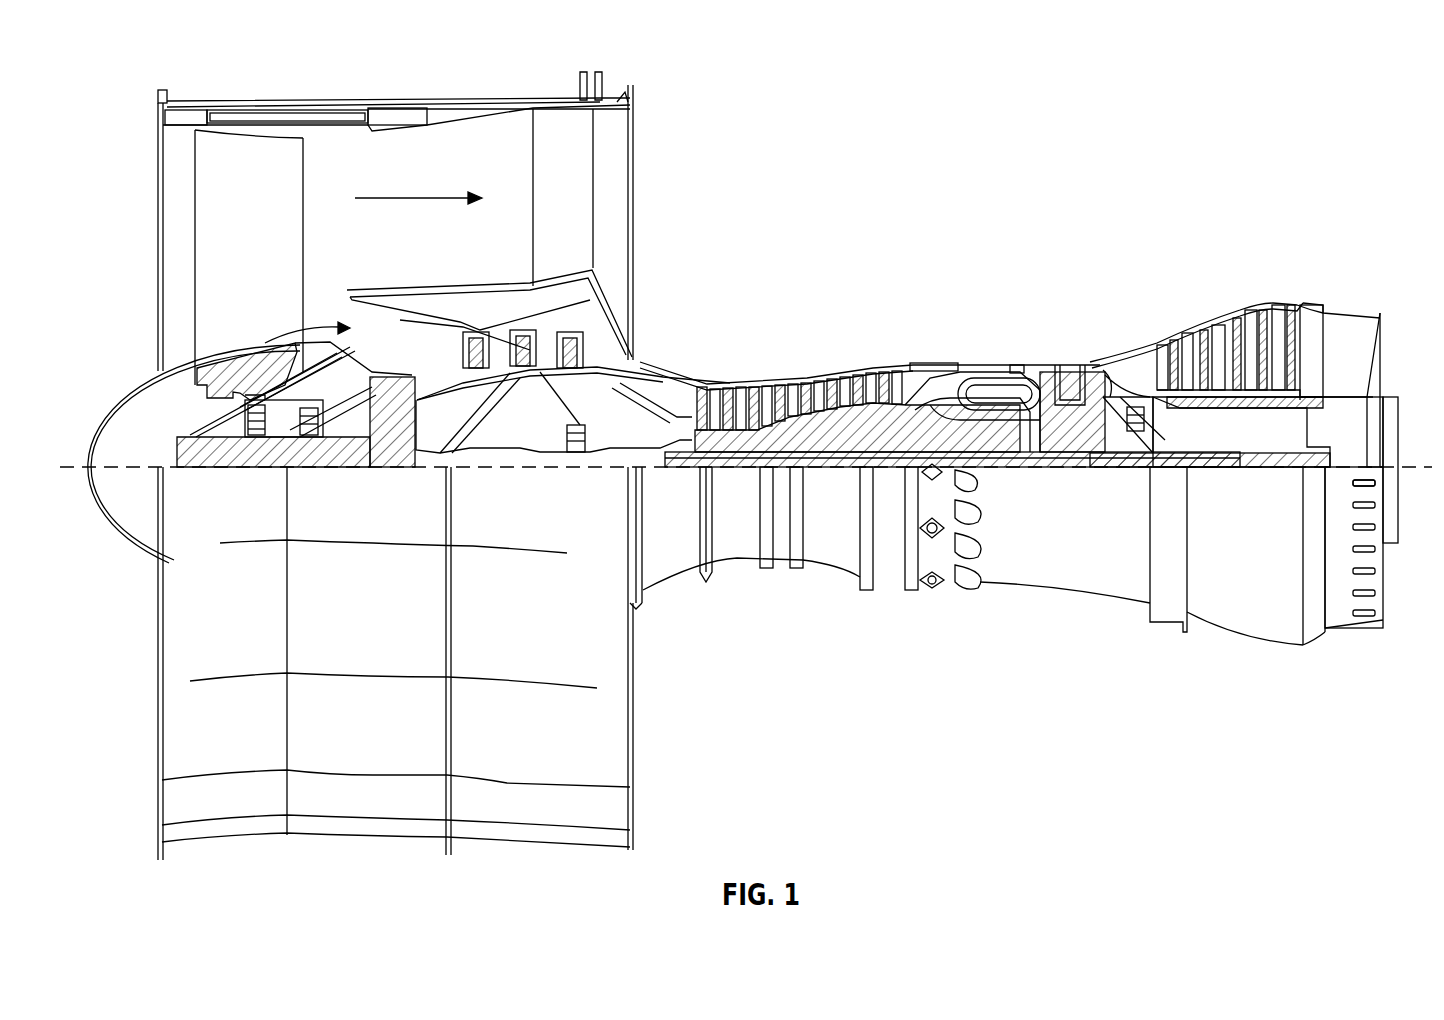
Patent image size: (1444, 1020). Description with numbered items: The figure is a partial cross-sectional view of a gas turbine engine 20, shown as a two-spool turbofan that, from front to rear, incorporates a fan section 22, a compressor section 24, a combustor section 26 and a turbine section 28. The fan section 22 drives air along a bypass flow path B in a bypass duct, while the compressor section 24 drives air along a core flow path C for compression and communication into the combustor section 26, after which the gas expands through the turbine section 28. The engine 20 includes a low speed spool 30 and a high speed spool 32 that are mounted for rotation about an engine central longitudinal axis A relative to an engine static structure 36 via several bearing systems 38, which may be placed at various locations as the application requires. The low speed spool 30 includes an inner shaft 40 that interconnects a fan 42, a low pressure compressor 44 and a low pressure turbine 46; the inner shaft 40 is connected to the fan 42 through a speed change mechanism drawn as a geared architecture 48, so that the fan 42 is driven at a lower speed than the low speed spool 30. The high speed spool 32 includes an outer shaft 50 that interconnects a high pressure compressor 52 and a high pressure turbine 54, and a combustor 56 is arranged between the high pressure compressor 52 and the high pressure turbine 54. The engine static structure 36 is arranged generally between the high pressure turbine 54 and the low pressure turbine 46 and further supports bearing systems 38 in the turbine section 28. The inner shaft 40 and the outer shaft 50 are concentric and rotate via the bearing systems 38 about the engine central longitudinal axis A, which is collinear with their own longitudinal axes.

The gas turbine engine 20 is at (1203, 140).
The fan section 22 is at (262, 92).
The compressor section 24 is at (820, 326).
The combustor section 26 is at (988, 326).
The turbine section 28 is at (1133, 306).
The low speed spool 30 is at (853, 470).
The high speed spool 32 is at (905, 410).
The engine static structure 36 is at (891, 584).
The bearing systems 38 is at (262, 437).
The inner shaft 40 is at (644, 462).
The fan 42 is at (277, 231).
The low pressure compressor 44 is at (552, 340).
The low pressure turbine 46 is at (1236, 326).
The geared architecture 48 is at (398, 438).
The outer shaft 50 is at (1022, 455).
The high pressure compressor 52 is at (810, 425).
The high pressure turbine 54 is at (1072, 365).
The combustor 56 is at (997, 378).
The engine central longitudinal axis A is at (1405, 462).
The bypass flow path B is at (420, 196).
The core flow path C is at (275, 322).